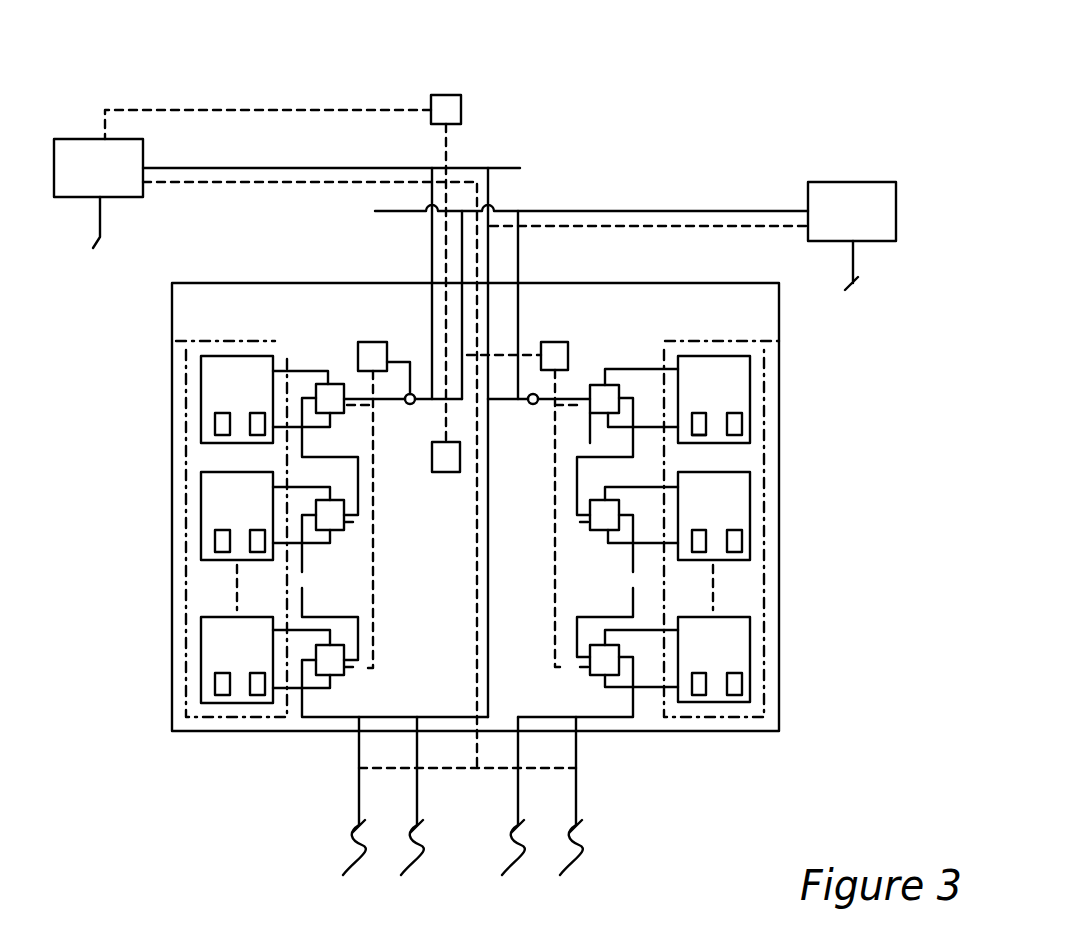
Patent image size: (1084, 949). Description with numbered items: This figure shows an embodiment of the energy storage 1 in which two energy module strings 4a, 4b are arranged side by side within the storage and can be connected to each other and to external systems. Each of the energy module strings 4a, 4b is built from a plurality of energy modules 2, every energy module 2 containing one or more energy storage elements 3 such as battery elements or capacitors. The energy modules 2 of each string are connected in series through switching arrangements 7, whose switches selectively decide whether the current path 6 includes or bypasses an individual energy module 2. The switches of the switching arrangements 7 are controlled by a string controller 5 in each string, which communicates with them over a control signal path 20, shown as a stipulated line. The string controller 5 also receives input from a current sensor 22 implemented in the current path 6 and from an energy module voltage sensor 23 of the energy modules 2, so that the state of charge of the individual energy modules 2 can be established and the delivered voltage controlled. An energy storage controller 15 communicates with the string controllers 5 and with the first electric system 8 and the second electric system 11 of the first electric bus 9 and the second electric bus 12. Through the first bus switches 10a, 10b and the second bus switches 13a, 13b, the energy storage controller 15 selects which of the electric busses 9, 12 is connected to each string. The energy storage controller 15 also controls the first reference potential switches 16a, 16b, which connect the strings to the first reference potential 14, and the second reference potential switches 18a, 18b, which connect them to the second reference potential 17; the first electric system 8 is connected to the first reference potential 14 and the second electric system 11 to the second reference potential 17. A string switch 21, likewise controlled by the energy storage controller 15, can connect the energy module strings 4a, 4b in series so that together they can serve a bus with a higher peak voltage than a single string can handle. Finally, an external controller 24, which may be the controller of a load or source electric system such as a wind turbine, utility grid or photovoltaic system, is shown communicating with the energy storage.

The energy storage 1 is at (172, 297).
The energy module 2 is at (200, 413).
The energy storage element 3 is at (213, 427).
The first energy module string 4a is at (200, 342).
The second energy module string 4b is at (763, 342).
The string controller 5 is at (365, 342).
The current path 6 is at (358, 617).
The switching arrangement 7 is at (328, 384).
The first electric system 8 is at (145, 148).
The first electric bus 9 is at (497, 168).
The first bus switch 10a is at (433, 337).
The first bus switch 10b is at (488, 340).
The second electric system 11 is at (808, 182).
The second electric bus 12 is at (593, 211).
The second bus switch 13a is at (462, 340).
The second bus switch 13b is at (518, 340).
The first reference potential 14 is at (100, 237).
The energy storage controller 15 is at (444, 472).
The first reference potential switch 16a is at (359, 767).
The first reference potential switch 16b is at (518, 768).
The second reference potential 17 is at (853, 283).
The second reference potential switch 18a is at (417, 767).
The second reference potential switch 18b is at (576, 768).
The control signal path 20 is at (374, 556).
The string switch 21 is at (488, 537).
The current sensor 22 is at (410, 404).
The energy module voltage sensor 23 is at (700, 436).
The external controller 24 is at (452, 93).